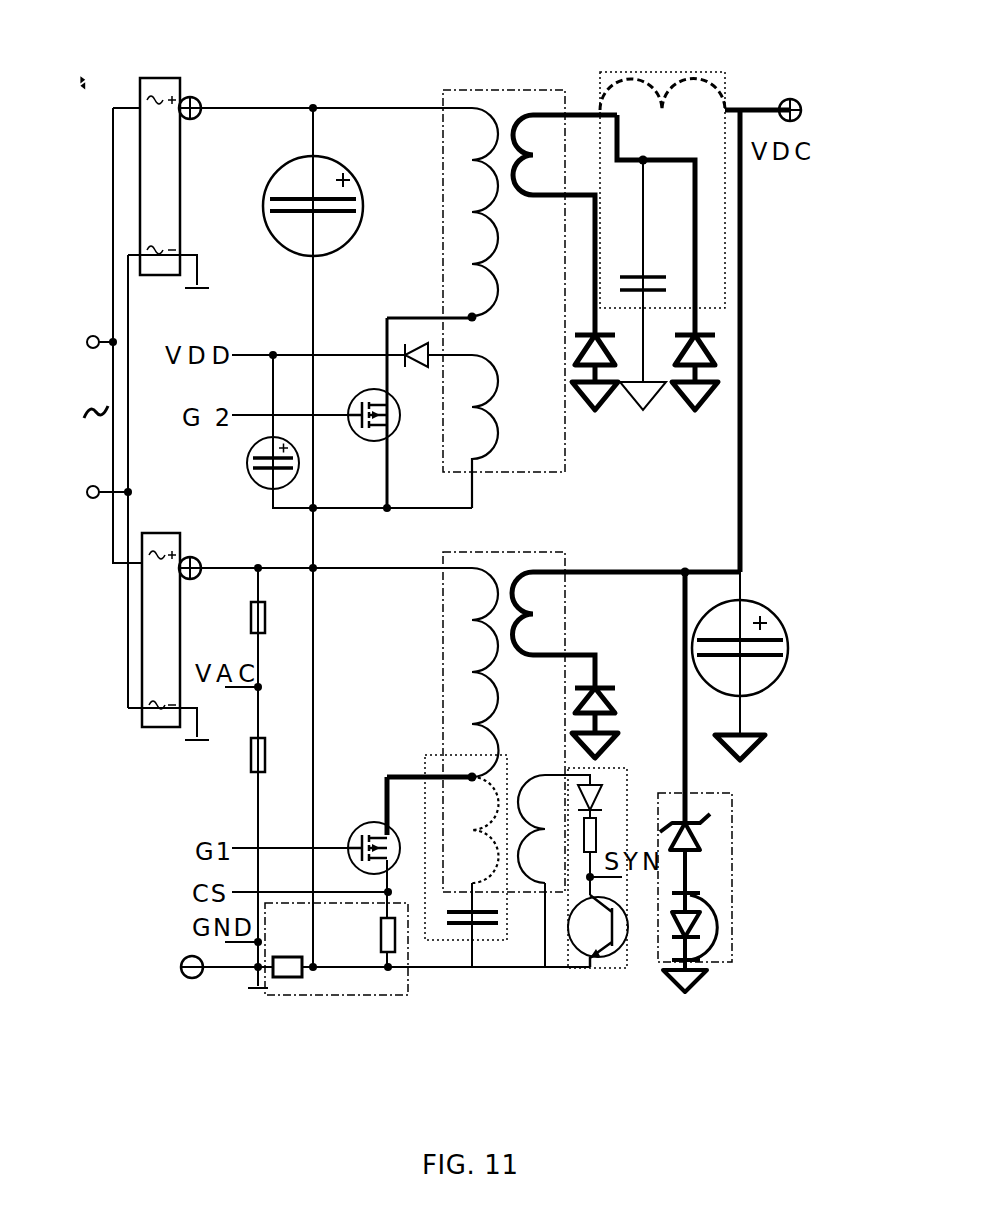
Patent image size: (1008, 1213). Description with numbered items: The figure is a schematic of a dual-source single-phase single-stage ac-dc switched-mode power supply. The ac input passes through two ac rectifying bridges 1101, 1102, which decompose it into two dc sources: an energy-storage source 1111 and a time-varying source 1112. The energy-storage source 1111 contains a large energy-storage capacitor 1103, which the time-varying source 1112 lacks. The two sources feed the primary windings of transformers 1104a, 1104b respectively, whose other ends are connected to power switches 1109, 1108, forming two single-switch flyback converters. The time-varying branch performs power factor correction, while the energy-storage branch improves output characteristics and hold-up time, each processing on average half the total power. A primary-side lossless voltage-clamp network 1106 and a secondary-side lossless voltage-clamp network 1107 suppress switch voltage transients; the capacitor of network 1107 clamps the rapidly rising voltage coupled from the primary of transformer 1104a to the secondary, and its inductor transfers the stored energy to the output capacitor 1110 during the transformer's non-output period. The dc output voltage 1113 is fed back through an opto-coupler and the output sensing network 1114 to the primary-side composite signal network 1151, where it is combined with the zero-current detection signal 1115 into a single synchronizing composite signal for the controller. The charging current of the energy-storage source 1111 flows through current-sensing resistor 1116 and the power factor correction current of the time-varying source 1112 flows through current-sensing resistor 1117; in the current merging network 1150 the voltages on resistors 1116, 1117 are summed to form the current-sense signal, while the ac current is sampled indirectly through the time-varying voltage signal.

The ac rectifying bridge 1101 is at (174, 76).
The ac rectifying bridge 1102 is at (152, 742).
The large energy-storage capacitor 1103 is at (322, 150).
The transformer 1104a is at (474, 105).
The transformer 1104b is at (481, 555).
The primary-side lossless voltage-clamp network 1106 is at (481, 942).
The secondary-side lossless voltage-clamp network 1107 is at (683, 72).
The power switch 1108 is at (372, 822).
The power switch 1109 is at (372, 390).
The output capacitor 1110 is at (756, 615).
The energy-storage source 1111 is at (196, 120).
The time-varying source 1112 is at (190, 556).
The dc output voltage 1113 is at (796, 100).
The output sensing network 1114 is at (730, 882).
The zero-current detection signal 1115 is at (591, 778).
The current-sensing resistor 1116 is at (290, 978).
The current-sensing resistor 1117 is at (393, 970).
The current merging network 1150 is at (275, 996).
The primary-side composite signal network 1151 is at (610, 968).